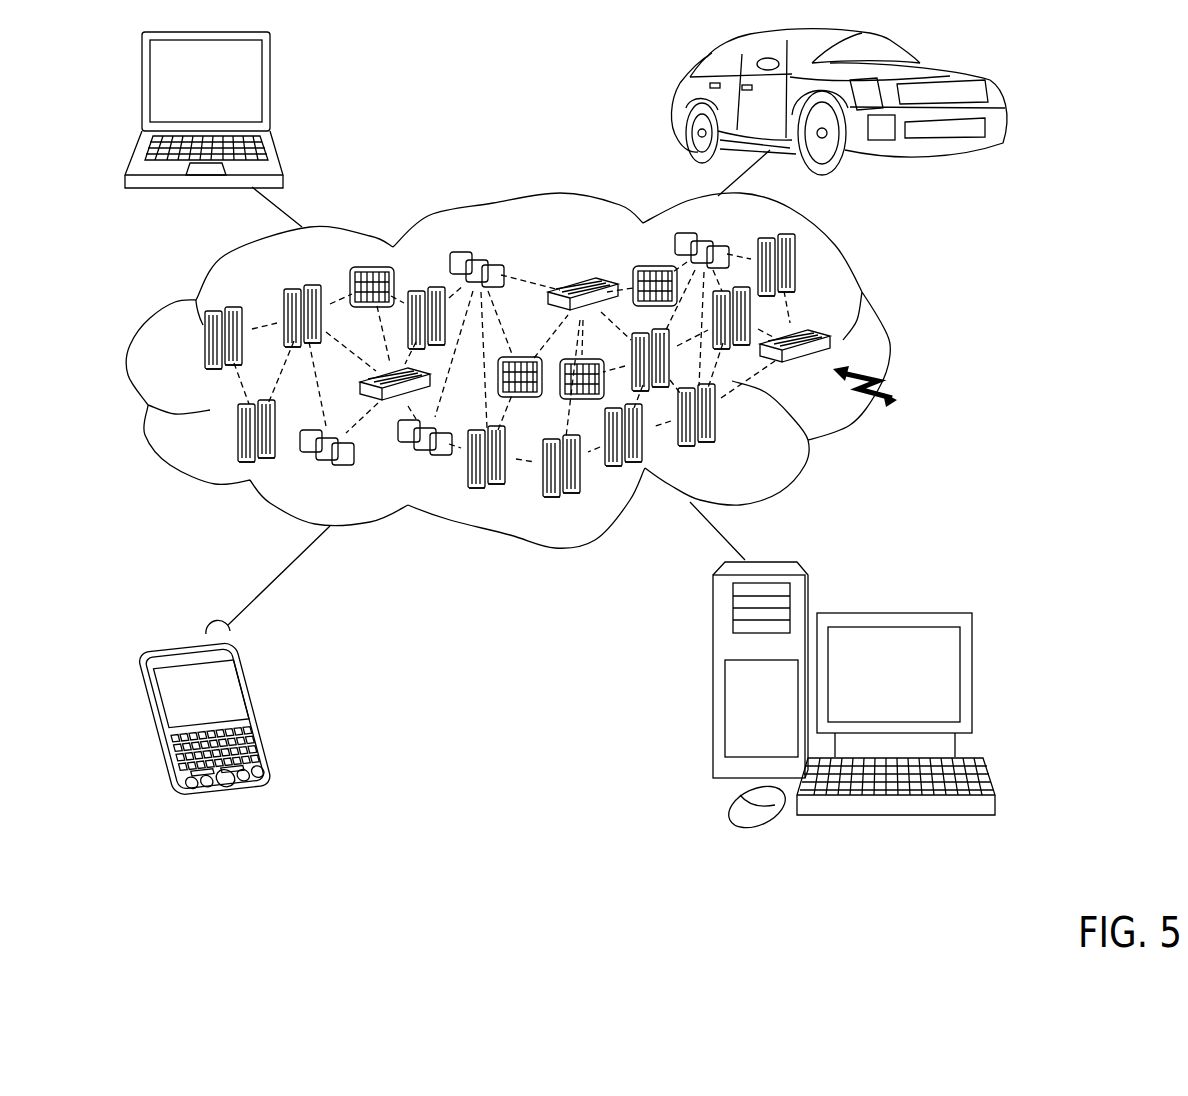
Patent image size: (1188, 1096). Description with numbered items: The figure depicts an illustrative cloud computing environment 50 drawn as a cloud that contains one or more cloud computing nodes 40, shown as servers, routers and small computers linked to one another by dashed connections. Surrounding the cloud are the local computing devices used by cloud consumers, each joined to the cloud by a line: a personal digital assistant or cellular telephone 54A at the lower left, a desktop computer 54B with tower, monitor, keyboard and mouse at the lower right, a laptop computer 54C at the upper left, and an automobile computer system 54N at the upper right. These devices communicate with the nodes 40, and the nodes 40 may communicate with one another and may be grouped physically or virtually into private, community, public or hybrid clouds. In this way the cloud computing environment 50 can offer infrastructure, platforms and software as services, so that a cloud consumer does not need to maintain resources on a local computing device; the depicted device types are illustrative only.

The laptop computer 54C is at (270, 88).
The automobile computer system 54N is at (688, 100).
The cloud computing environment 50 is at (888, 343).
The cloud computing nodes 40 is at (882, 391).
The personal digital assistant (PDA) or cellular telephone 54A is at (268, 707).
The desktop computer 54B is at (893, 613).